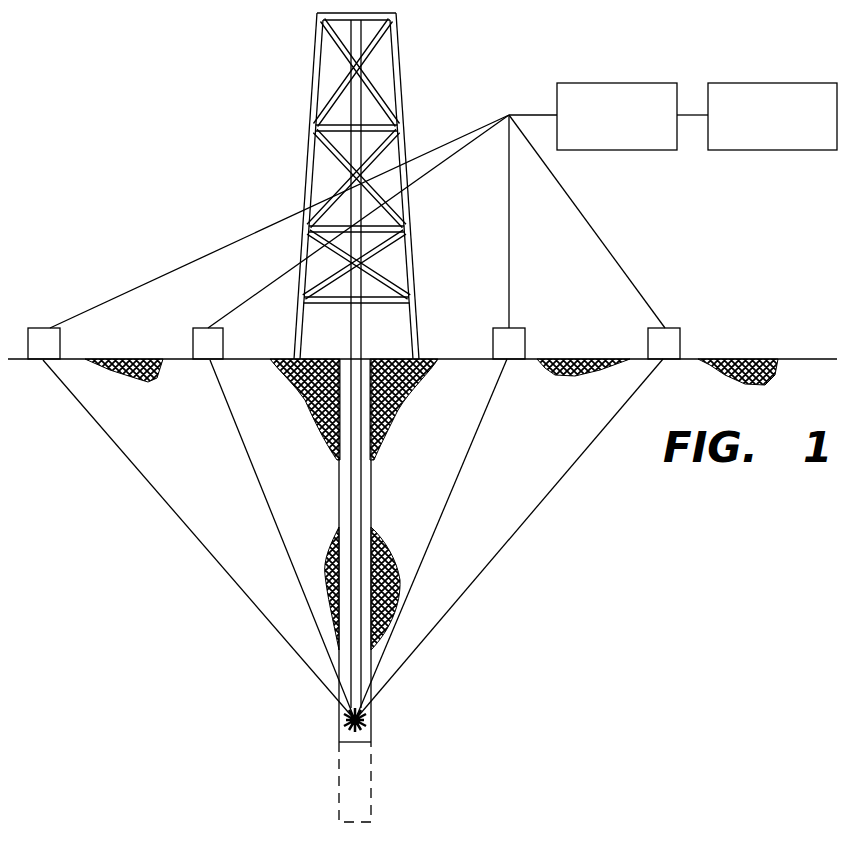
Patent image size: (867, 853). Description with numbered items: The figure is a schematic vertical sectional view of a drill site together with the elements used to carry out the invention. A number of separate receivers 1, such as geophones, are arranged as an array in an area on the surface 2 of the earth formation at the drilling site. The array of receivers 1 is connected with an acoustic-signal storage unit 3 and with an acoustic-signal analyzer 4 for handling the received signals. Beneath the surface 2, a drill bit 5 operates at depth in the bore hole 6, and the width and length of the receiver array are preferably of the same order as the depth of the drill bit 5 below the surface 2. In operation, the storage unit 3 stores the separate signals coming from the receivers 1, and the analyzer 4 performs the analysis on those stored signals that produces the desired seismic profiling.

The receivers 1 is at (193, 343).
The surface 2 is at (752, 359).
The acoustic-signal storage unit 3 is at (603, 150).
The acoustic-signal analyzer 4 is at (760, 150).
The drill bit 5 is at (365, 722).
The bore hole 6 is at (371, 510).